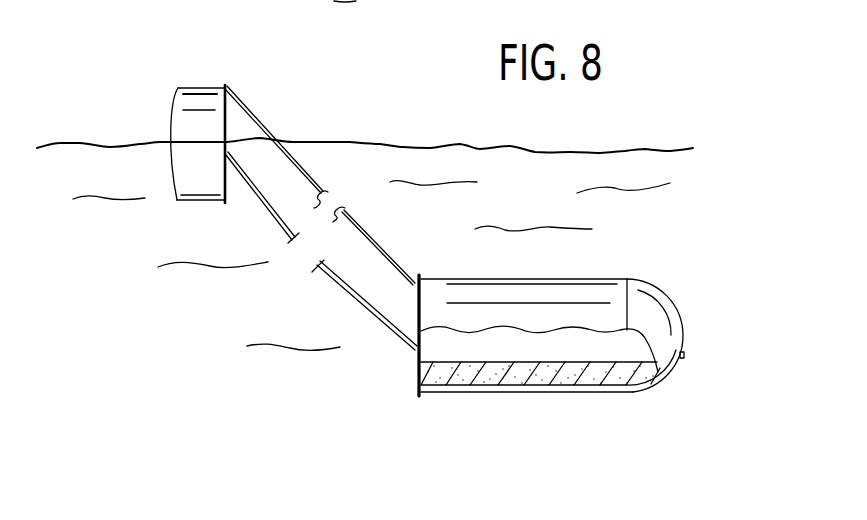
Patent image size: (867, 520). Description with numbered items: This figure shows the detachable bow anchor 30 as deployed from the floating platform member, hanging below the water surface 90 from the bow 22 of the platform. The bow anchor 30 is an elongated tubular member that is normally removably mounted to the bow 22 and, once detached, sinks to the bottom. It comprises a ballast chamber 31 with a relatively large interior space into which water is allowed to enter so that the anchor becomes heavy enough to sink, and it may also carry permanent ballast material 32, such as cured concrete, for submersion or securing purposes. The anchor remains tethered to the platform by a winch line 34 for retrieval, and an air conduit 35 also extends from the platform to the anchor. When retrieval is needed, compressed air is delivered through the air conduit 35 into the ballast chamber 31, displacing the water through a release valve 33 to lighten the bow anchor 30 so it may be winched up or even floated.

The bow 22 is at (190, 87).
The winch line 34 is at (254, 119).
The air conduit 35 is at (258, 207).
The water surface 90 is at (403, 146).
The bow anchor 30 is at (650, 283).
The ballast chamber 31 is at (598, 349).
The permanent ballast material 32 is at (543, 372).
The release valve 33 is at (684, 355).